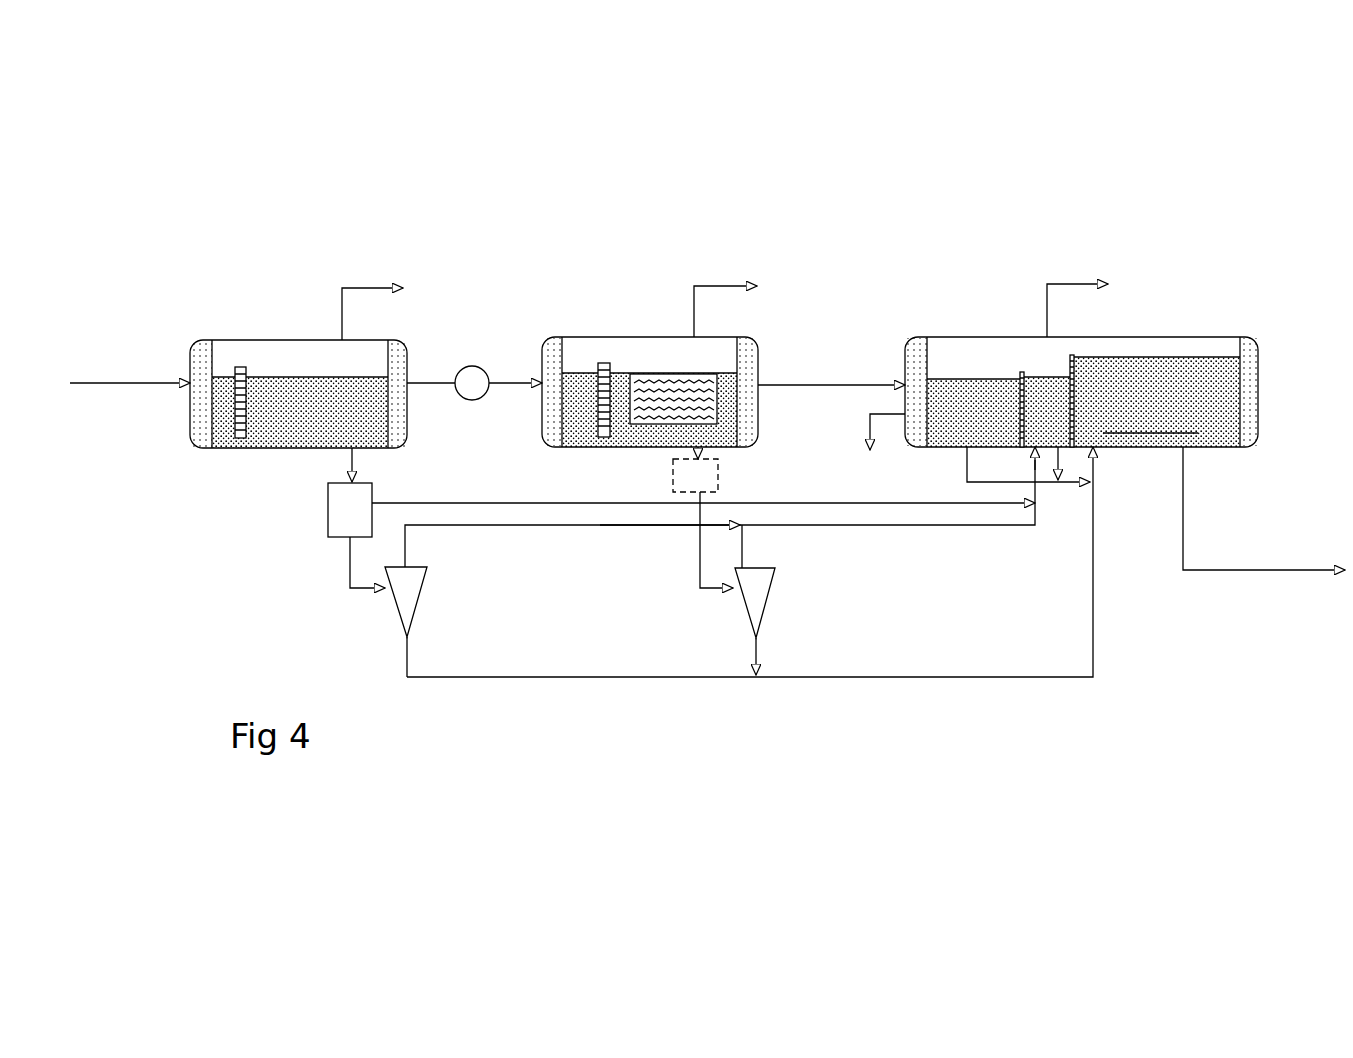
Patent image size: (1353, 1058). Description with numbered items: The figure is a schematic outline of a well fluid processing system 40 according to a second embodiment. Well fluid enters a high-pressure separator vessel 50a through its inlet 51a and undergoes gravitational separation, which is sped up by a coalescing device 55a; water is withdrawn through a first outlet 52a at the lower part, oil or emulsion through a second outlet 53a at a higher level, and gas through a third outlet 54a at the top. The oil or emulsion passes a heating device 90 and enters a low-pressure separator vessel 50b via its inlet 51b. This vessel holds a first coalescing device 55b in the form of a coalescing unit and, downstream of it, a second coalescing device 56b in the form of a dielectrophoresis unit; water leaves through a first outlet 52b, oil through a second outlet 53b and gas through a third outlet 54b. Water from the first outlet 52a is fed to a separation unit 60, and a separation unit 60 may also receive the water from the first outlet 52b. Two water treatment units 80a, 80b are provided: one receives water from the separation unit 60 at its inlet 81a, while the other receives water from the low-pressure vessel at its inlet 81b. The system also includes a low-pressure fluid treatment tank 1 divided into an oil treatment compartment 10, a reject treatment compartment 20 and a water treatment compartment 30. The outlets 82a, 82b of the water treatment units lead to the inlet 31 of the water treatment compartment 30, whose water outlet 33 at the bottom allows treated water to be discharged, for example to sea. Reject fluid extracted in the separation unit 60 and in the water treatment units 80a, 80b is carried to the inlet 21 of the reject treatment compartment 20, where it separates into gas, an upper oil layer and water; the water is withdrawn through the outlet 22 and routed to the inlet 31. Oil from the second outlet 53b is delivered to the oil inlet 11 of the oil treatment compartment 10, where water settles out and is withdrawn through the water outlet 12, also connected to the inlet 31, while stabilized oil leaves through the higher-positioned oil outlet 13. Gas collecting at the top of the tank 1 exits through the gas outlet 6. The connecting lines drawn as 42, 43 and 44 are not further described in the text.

The well fluid processing system 40 is at (748, 195).
The high-pressure separator vessel 50a is at (295, 310).
The low-pressure separator vessel 50b is at (640, 275).
The inlet 51a is at (186, 378).
The inlet 51b is at (540, 380).
The first outlet 52a is at (356, 452).
The first outlet 52b is at (702, 450).
The second outlet 53a is at (414, 382).
The second outlet 53b is at (762, 384).
The third outlet 54a is at (355, 330).
The third outlet 54b is at (700, 330).
The coalescing device 55a is at (240, 366).
The first coalescing device 55b is at (604, 362).
The second coalescing device 56b is at (660, 375).
The separation unit 60 is at (328, 510).
The heating device 90 is at (476, 400).
The low-pressure fluid treatment tank 1 is at (1147, 316).
The gas outlet 6 is at (1048, 335).
The oil treatment compartment 10 is at (955, 365).
The oil inlet 11 is at (900, 382).
The water outlet 12 is at (966, 452).
The oil outlet 13 is at (895, 430).
The reject treatment compartment 20 is at (1033, 363).
The inlet 21 is at (1030, 456).
The outlet 22 is at (1058, 482).
The water treatment compartment 30 is at (1200, 350).
The inlet 31 is at (1095, 452).
The water outlet 33 is at (1186, 451).
The recycle line 42 is at (925, 676).
The control line 43 is at (548, 503).
The feed line 44 is at (576, 528).
The water treatment unit 80a is at (418, 597).
The water treatment unit 80b is at (762, 600).
The inlet 81a is at (380, 590).
The inlet 81b is at (734, 592).
The outlet 82a is at (412, 634).
The outlet 82b is at (760, 634).